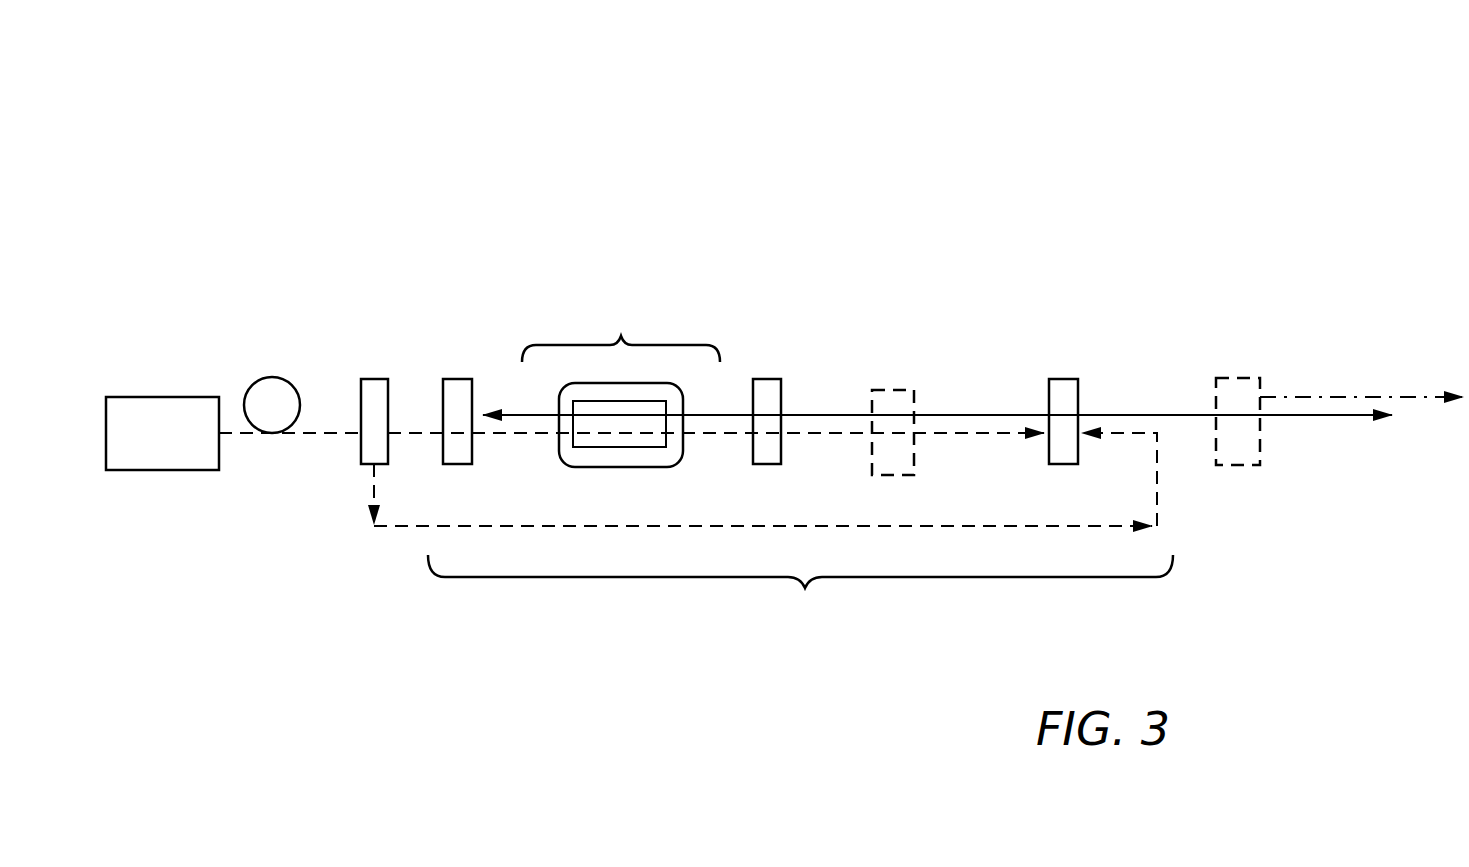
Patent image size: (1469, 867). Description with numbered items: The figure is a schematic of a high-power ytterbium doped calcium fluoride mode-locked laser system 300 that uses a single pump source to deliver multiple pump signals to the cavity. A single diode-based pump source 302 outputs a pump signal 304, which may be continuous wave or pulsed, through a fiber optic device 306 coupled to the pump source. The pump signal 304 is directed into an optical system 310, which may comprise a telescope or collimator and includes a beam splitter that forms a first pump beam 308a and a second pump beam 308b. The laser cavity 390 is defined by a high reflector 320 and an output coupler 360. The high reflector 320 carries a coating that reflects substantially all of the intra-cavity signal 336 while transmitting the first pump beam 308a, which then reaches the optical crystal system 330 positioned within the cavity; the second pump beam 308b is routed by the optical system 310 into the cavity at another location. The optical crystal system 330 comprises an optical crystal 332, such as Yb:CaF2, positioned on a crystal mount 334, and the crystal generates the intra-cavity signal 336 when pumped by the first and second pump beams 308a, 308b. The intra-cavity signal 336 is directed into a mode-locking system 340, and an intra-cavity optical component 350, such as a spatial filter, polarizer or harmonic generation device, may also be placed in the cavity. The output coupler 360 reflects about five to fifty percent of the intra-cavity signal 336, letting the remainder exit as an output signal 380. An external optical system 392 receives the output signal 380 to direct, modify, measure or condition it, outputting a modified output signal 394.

The laser system 300 is at (1227, 170).
The single diode-based pump source 302 is at (141, 451).
The pump signal 304 is at (328, 430).
The fiber optic device 306 is at (271, 377).
The first pump beam 308a is at (418, 430).
The second pump beam 308b is at (890, 526).
The optical system 310 is at (373, 379).
The high reflector 320 is at (456, 379).
The optical crystal system 330 is at (621, 332).
The optical crystal 332 is at (607, 447).
The crystal mount 334 is at (638, 467).
The intra-cavity signal 336 is at (975, 415).
The mode-locking system 340 is at (766, 379).
The intra-cavity optical component 350 is at (884, 390).
The output coupler 360 is at (1061, 379).
The output signal 380 is at (1155, 415).
The laser cavity 390 is at (800, 590).
The external optical system 392 is at (1238, 378).
The modified output signal 394 is at (1327, 397).